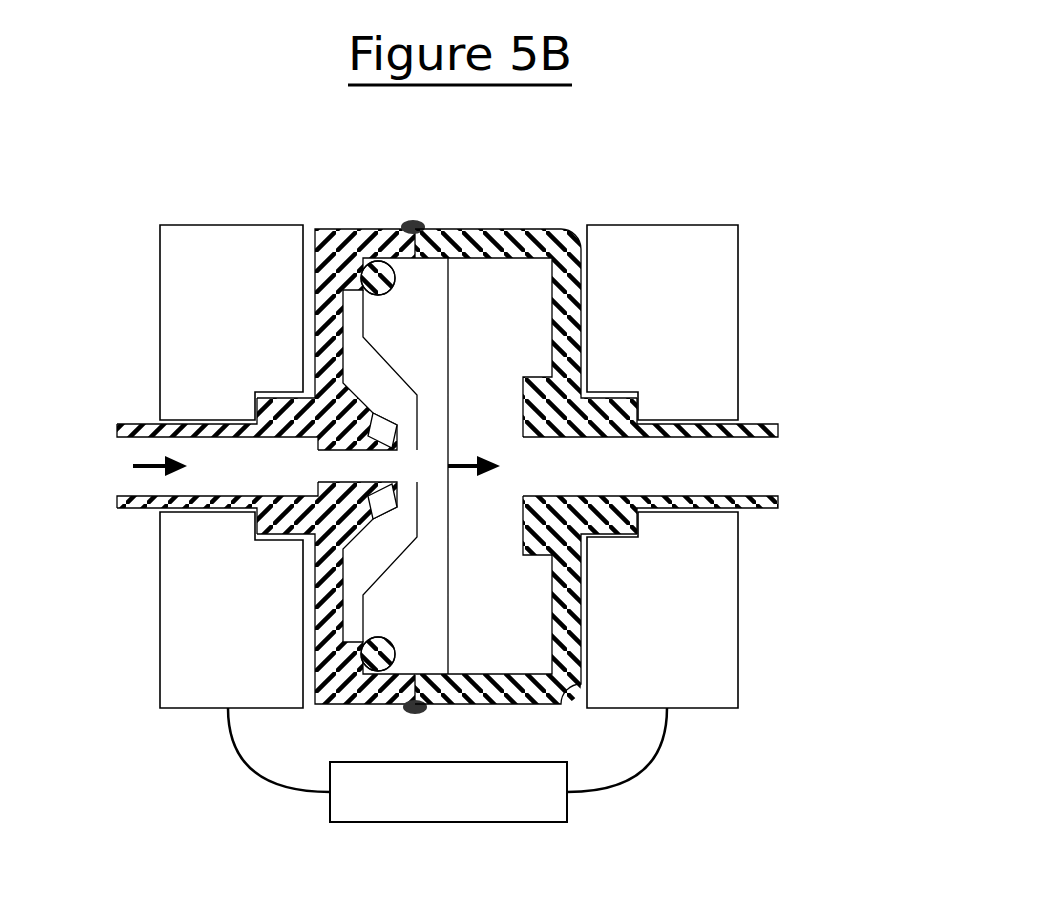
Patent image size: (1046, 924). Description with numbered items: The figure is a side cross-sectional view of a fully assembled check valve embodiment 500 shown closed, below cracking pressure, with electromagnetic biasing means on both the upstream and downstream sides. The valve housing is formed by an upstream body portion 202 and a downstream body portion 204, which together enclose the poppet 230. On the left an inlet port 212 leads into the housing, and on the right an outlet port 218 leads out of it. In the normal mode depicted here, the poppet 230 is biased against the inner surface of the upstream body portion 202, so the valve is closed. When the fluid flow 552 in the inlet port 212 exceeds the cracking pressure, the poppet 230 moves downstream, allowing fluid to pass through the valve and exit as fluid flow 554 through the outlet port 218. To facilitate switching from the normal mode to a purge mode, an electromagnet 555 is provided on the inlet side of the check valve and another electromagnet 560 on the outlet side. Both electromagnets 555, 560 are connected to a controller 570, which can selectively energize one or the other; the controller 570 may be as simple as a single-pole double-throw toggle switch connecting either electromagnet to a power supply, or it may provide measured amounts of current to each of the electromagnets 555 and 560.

The check valve embodiment 500 is at (325, 150).
The upstream body portion 202 is at (343, 210).
The downstream body portion 204 is at (521, 210).
The poppet 230 is at (433, 337).
The inlet port 212 is at (137, 424).
The outlet port 218 is at (753, 424).
The fluid flow 552 is at (152, 470).
The fluid flow 554 is at (487, 467).
The electromagnet 555 is at (258, 269).
The electromagnet 560 is at (686, 269).
The controller 570 is at (495, 822).